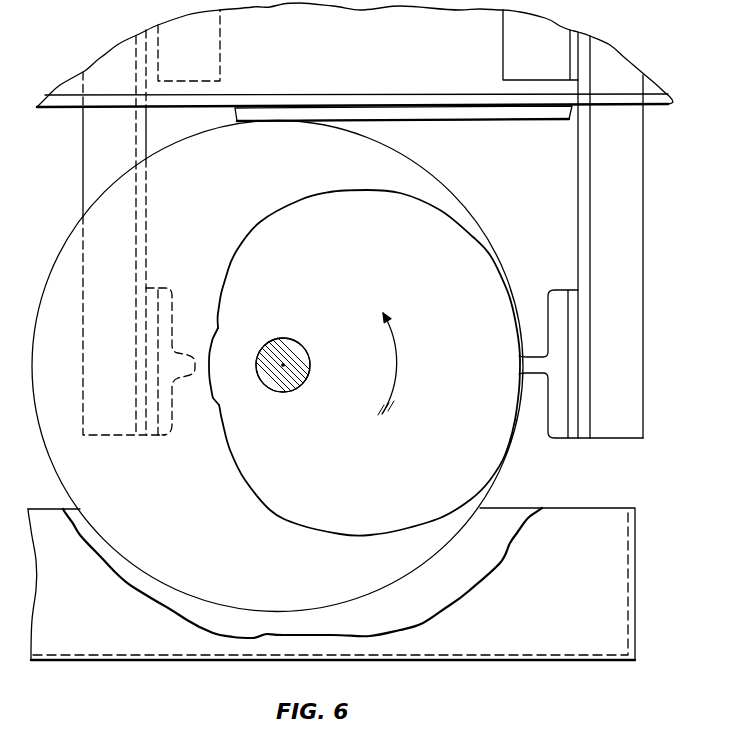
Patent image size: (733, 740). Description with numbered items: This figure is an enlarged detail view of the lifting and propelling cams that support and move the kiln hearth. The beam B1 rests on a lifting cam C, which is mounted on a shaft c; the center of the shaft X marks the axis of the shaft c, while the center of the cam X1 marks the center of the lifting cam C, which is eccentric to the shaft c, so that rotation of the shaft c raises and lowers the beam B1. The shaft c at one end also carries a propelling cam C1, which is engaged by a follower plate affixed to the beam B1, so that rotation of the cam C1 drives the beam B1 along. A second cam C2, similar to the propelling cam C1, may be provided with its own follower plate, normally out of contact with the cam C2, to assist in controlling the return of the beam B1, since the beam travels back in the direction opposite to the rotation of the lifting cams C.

The beam B1 is at (334, 64).
The lifting cam C is at (246, 186).
The second cam C2 is at (56, 173).
The propelling cam C1 is at (353, 310).
The center of the shaft X is at (281, 366).
The center of the cam X1 is at (278, 363).
The shaft c is at (300, 371).